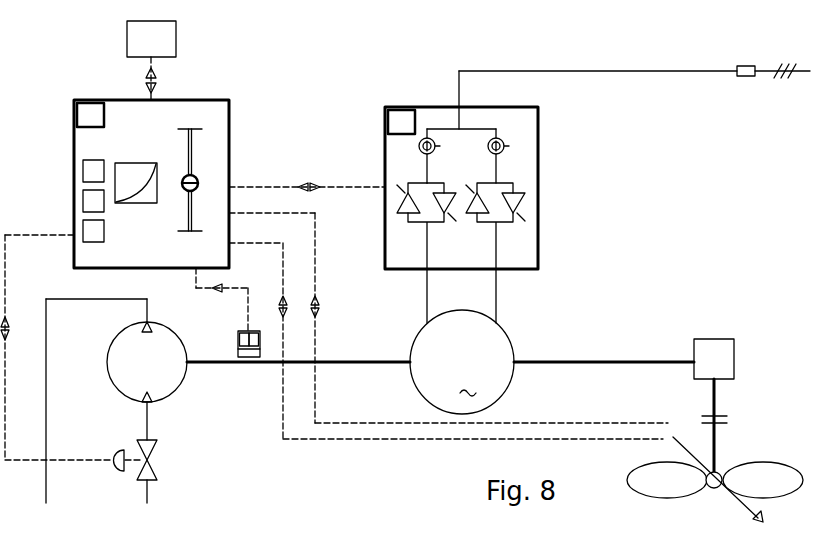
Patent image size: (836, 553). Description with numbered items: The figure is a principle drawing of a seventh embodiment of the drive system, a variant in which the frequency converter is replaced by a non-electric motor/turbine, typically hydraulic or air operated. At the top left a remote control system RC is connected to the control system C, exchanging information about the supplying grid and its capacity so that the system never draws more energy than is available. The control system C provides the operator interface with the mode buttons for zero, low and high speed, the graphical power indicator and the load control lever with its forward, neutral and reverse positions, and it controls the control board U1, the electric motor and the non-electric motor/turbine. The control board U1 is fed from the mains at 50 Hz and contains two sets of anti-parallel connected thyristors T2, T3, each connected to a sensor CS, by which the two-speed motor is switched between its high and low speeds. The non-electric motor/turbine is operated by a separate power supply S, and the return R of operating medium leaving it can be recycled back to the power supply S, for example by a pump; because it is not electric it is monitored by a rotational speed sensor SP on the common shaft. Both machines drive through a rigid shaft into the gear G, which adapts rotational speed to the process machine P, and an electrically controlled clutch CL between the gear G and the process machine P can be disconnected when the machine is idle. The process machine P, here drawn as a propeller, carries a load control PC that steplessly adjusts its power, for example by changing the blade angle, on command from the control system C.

The remote control system RC is at (151, 60).
The control system C is at (151, 184).
The control board U1 is at (461, 170).
The sensor CS is at (472, 146).
The anti-parallel connected thyristors T2 is at (426, 253).
The anti-parallel connected thyristors T3 is at (495, 253).
The mains supply 50 Hz is at (634, 66).
The rotational speed sensor SP is at (249, 344).
The return R is at (46, 412).
The power supply S is at (147, 482).
The gear G is at (714, 359).
The clutch CL is at (703, 420).
The process machine P is at (715, 489).
The load control PC is at (707, 479).